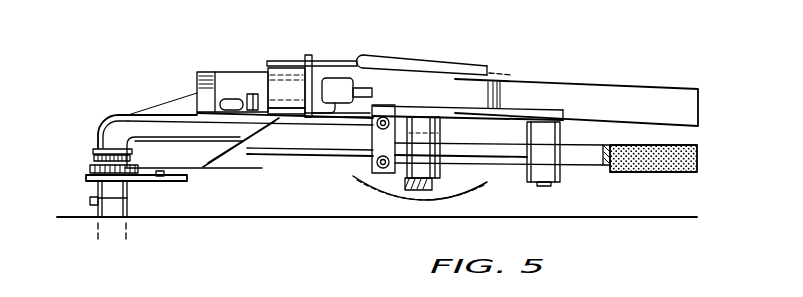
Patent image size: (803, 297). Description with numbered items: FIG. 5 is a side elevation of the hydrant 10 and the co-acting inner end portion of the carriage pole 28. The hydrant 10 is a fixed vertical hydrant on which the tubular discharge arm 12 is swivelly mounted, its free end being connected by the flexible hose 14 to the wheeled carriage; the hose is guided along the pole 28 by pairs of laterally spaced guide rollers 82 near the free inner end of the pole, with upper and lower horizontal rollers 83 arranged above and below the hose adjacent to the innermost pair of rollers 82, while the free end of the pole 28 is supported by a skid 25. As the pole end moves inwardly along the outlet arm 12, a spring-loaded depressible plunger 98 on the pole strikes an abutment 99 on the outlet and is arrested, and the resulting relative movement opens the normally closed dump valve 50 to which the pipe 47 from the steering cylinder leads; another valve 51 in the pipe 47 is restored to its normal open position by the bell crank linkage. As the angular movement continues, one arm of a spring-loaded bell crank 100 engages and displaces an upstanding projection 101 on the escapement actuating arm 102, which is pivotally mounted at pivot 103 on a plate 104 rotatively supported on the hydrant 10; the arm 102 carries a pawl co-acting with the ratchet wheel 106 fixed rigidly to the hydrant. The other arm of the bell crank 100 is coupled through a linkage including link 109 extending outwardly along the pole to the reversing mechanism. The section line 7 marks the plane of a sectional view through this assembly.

The section line 7- 7 is at (78, 162).
The hydrant 10 is at (86, 213).
The tubular discharge arm 12 is at (135, 125).
The flexible hose 14 is at (668, 175).
The skid 25 is at (482, 183).
The pole 28 is at (592, 95).
The pipe 47 is at (228, 100).
The dump valve 50 is at (248, 96).
The valve 51 is at (341, 88).
The guide rollers 82 is at (408, 183).
The horizontal rollers 83 is at (373, 133).
The spring-loaded depressible plunger 98 is at (208, 72).
The abutment 99 is at (167, 107).
The spring-loaded bell crank 100 is at (281, 67).
The upstanding projection 101 is at (313, 62).
The escapement actuating arm 102 is at (213, 165).
The pivot 103 is at (160, 177).
The plate 104 is at (187, 181).
The ratchet wheel 106 is at (93, 152).
The link 109 is at (457, 62).